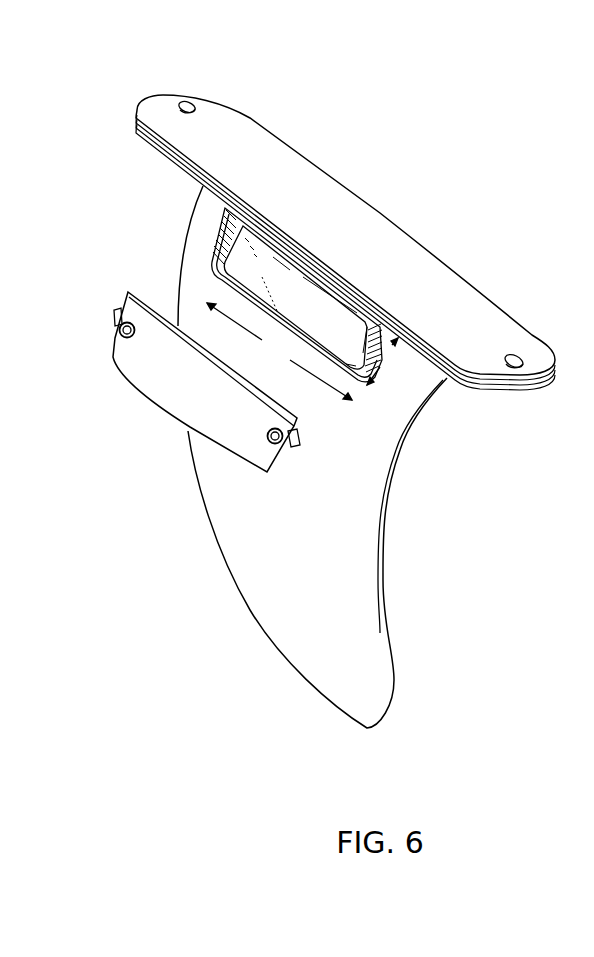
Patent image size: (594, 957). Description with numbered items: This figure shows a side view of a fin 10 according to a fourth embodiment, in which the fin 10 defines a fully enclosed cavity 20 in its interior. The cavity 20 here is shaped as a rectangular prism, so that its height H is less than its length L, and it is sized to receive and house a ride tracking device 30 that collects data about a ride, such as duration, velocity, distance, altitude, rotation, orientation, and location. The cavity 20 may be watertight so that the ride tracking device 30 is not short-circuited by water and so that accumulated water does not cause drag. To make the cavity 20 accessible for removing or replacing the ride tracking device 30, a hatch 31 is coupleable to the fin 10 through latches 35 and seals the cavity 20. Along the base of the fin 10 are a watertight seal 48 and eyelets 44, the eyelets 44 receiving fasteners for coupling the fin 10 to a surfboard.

The fin 10 is at (430, 131).
The cavity 20 is at (226, 213).
The ride tracking device 30 is at (338, 327).
The hatch 31 is at (134, 358).
The latches 35 is at (115, 312).
The eyelets 44 is at (186, 102).
The watertight seal 48 is at (533, 389).